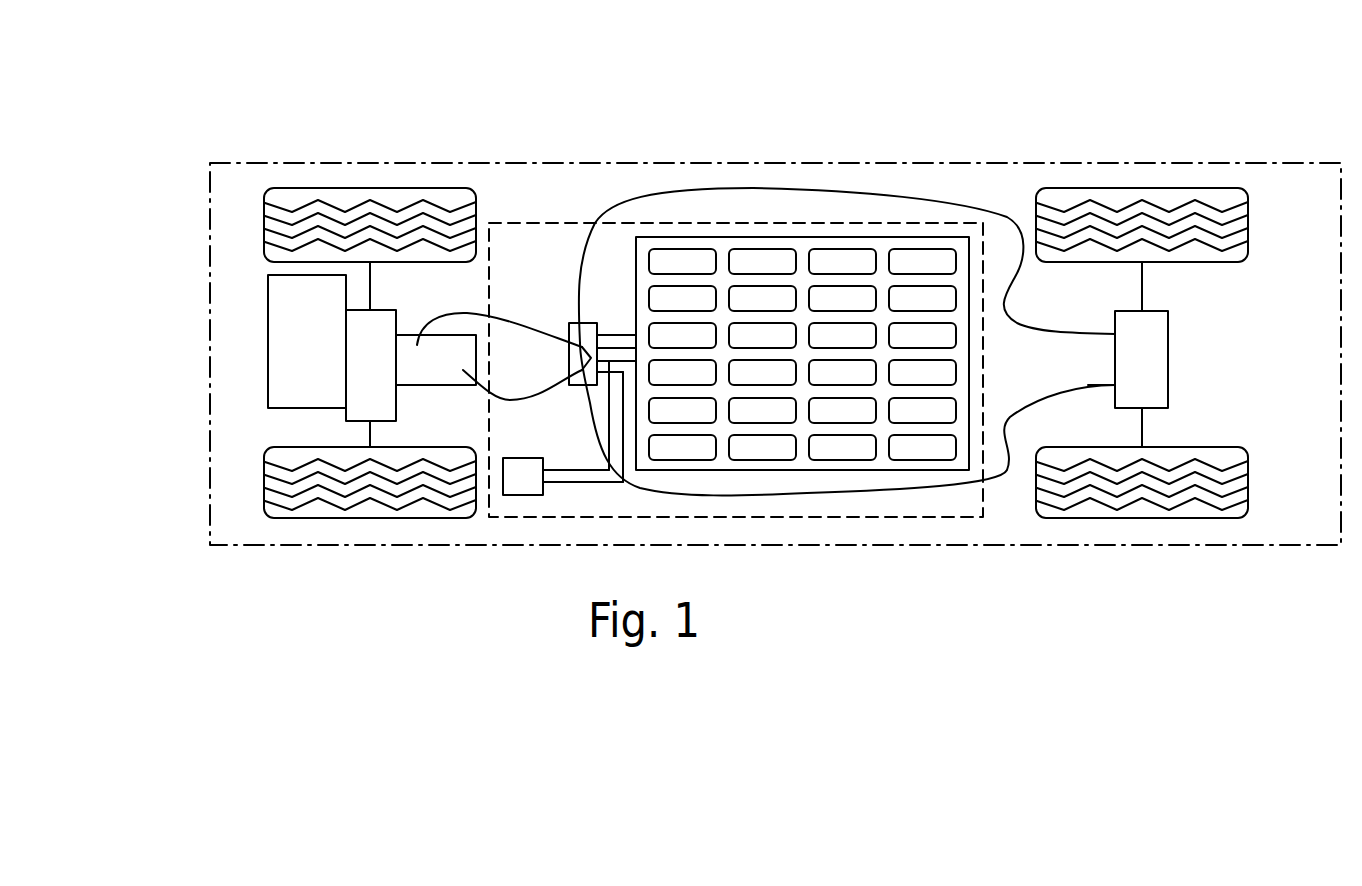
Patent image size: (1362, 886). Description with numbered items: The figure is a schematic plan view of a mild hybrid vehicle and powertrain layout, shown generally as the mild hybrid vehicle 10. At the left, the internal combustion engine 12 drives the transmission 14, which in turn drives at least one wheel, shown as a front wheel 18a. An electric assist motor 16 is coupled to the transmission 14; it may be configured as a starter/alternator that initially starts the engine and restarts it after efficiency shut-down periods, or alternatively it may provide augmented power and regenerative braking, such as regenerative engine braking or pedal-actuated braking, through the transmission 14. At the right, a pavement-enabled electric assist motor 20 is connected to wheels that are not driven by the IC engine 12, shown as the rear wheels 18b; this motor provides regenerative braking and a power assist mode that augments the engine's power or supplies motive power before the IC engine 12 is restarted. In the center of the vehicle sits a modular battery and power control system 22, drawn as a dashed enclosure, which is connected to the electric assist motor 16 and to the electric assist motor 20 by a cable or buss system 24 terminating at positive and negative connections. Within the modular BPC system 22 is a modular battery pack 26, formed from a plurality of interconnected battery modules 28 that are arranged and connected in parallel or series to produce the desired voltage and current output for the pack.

The mild hybrid vehicle 10 is at (1005, 118).
The internal combustion engine 12 is at (277, 340).
The transmission 14 is at (352, 358).
The electric assist motor 16 is at (413, 385).
The front wheel 18a is at (299, 195).
The rear wheels 18b is at (1143, 195).
The pavement-enabled electric assist motor 20 is at (1155, 358).
The modular battery and power control system 22 is at (567, 205).
The cable or buss system 24 is at (766, 319).
The modular battery pack 26 is at (870, 230).
The battery modules 28 is at (762, 258).